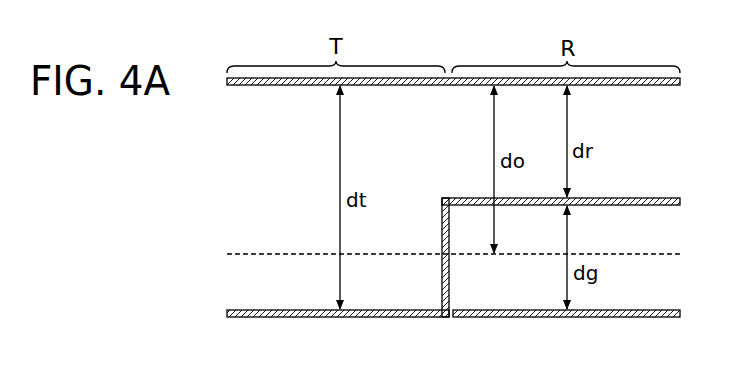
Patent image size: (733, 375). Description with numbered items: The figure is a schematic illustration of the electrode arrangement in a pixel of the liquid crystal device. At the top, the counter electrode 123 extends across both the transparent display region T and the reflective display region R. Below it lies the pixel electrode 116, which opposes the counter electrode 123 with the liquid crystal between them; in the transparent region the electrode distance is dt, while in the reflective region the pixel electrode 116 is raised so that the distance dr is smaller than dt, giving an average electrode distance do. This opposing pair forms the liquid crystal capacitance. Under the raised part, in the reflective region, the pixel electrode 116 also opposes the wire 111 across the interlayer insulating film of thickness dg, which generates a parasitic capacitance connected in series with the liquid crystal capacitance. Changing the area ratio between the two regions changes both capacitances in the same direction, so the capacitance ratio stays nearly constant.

The counter electrode 123 is at (412, 81).
The pixel electrode 116 is at (291, 318).
The wire 111 is at (618, 318).